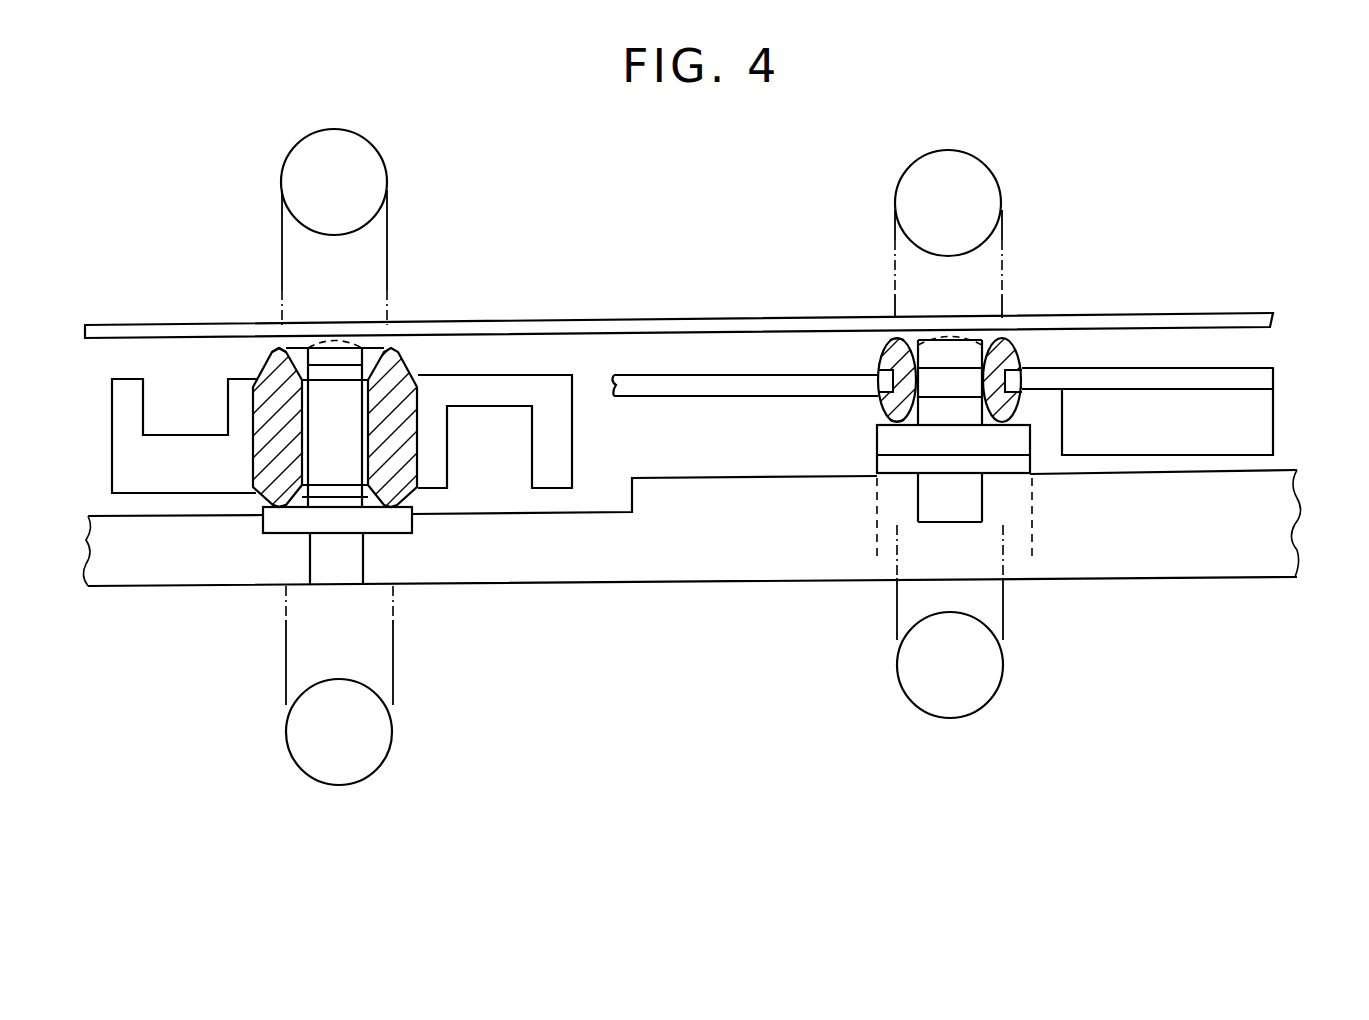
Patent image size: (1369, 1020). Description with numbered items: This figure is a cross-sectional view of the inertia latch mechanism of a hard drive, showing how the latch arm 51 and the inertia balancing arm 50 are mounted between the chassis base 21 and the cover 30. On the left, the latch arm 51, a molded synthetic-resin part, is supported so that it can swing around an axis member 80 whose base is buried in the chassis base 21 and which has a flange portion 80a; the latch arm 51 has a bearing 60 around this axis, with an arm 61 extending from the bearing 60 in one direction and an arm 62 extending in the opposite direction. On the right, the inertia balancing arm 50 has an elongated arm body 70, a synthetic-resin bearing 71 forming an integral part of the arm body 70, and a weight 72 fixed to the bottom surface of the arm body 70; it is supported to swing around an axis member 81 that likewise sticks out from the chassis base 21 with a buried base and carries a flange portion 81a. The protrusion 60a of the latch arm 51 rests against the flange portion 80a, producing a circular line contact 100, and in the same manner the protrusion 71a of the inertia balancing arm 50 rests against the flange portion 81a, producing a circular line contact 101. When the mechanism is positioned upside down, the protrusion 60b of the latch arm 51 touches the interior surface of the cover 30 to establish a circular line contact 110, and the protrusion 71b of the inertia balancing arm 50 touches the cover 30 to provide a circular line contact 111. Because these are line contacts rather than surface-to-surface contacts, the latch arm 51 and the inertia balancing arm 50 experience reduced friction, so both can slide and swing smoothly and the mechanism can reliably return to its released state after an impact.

The chassis base 21 is at (690, 567).
The cover 30 is at (1200, 313).
The inertia balancing arm 50 is at (803, 364).
The latch arm 51 is at (470, 365).
The bearing 60 is at (403, 357).
The protrusion 60a is at (284, 533).
The protrusion 60b is at (280, 348).
The arm 61 is at (522, 373).
The arm 62 is at (182, 448).
The arm body 70 is at (728, 375).
The bearing 71 is at (1012, 350).
The protrusion 71a is at (895, 430).
The protrusion 71b is at (882, 348).
The weight 72 is at (1280, 412).
The axis member 80 is at (338, 338).
The flange portion 80a is at (402, 523).
The axis member 81 is at (944, 330).
The flange portion 81a is at (1012, 448).
The circular line contact 100 is at (365, 773).
The circular line contact 101 is at (982, 705).
The circular line contact 110 is at (350, 124).
The circular line contact 111 is at (908, 162).